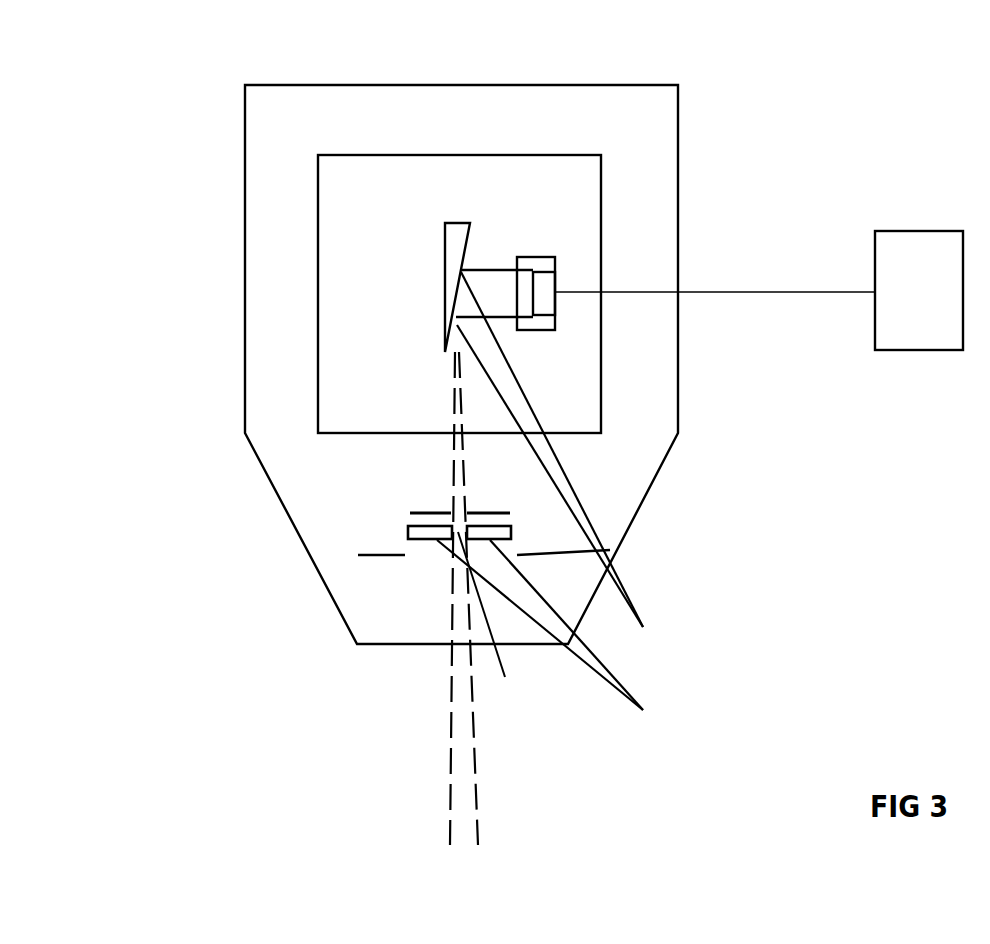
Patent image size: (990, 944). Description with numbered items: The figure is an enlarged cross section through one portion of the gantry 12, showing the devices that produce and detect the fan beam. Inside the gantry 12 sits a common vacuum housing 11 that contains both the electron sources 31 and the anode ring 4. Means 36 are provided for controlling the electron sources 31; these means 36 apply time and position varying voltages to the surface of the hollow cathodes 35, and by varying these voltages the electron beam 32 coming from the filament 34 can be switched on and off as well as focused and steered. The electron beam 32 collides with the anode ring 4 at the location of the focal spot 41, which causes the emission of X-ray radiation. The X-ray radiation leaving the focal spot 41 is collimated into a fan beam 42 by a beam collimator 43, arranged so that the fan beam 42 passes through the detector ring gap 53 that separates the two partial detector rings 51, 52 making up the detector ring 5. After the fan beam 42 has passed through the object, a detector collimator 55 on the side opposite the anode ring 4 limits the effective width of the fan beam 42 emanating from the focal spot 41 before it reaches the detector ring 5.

The anode ring 4 is at (447, 223).
The detector ring 5 is at (548, 636).
The vacuum housing 11 is at (601, 338).
The gantry 12 is at (245, 310).
The electron source 31 is at (555, 330).
The electron beam 32 is at (502, 310).
The filament 34 is at (543, 272).
The hollow cathode 35 is at (541, 258).
The means for controlling the electron sources 36 is at (759, 290).
The focal spot 41 is at (564, 460).
The fan beam 42 is at (477, 742).
The beam collimator 43 is at (408, 512).
The partial detector ring 51 is at (410, 540).
The partial detector ring 52 is at (472, 540).
The detector ring gap 53 is at (488, 621).
The detector collimator 55 is at (610, 550).